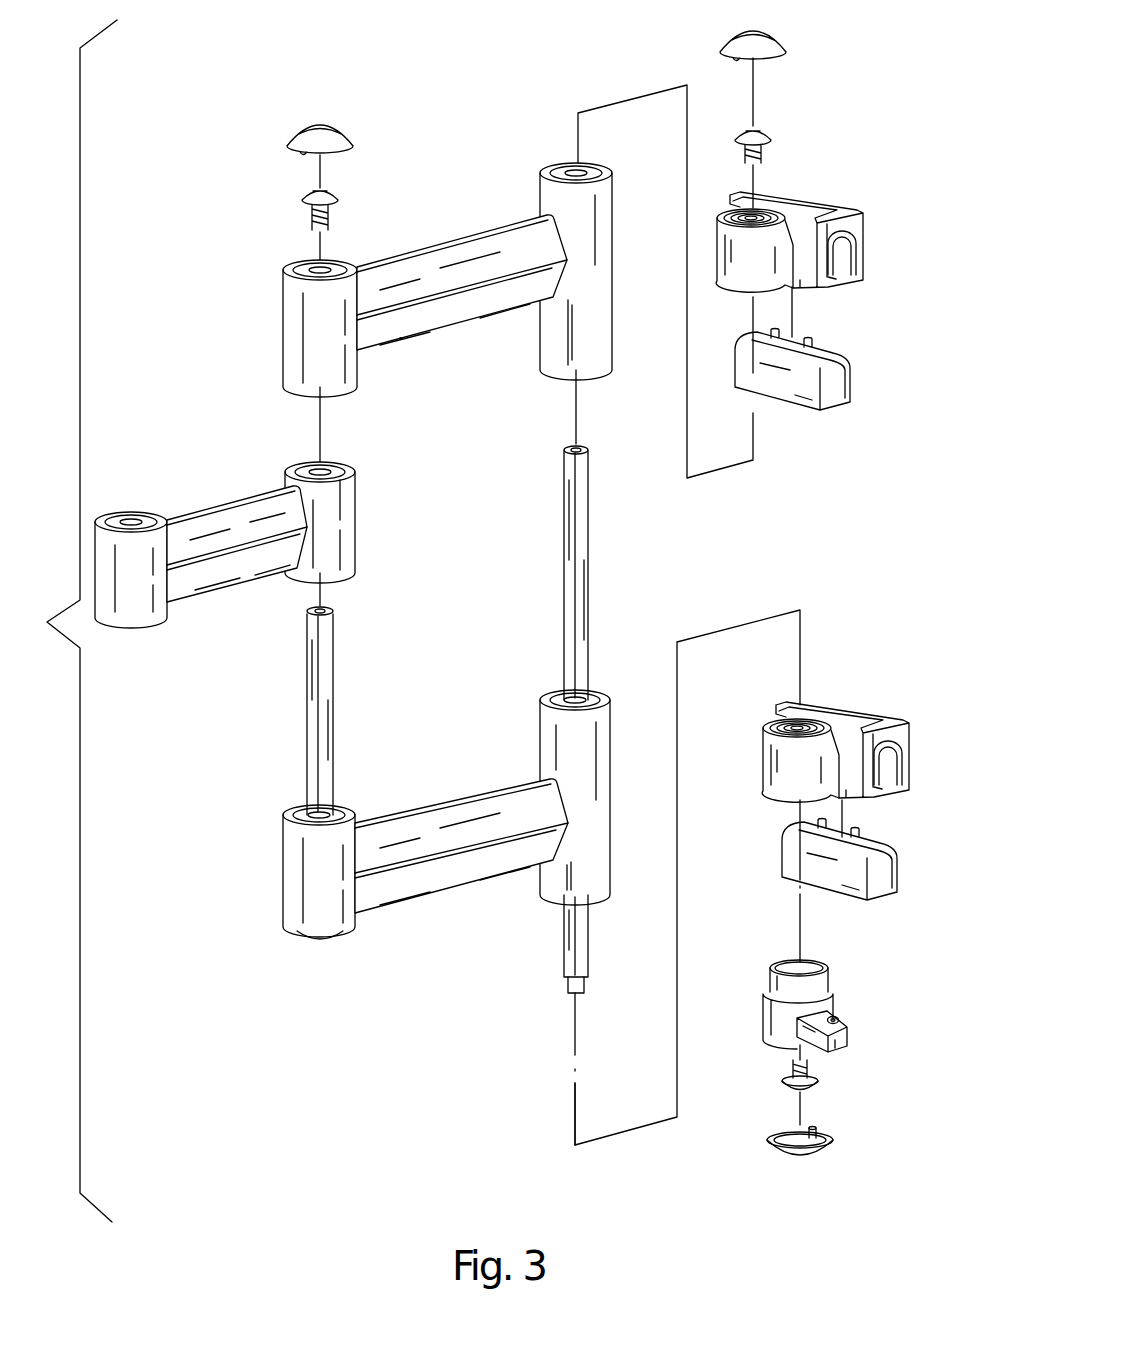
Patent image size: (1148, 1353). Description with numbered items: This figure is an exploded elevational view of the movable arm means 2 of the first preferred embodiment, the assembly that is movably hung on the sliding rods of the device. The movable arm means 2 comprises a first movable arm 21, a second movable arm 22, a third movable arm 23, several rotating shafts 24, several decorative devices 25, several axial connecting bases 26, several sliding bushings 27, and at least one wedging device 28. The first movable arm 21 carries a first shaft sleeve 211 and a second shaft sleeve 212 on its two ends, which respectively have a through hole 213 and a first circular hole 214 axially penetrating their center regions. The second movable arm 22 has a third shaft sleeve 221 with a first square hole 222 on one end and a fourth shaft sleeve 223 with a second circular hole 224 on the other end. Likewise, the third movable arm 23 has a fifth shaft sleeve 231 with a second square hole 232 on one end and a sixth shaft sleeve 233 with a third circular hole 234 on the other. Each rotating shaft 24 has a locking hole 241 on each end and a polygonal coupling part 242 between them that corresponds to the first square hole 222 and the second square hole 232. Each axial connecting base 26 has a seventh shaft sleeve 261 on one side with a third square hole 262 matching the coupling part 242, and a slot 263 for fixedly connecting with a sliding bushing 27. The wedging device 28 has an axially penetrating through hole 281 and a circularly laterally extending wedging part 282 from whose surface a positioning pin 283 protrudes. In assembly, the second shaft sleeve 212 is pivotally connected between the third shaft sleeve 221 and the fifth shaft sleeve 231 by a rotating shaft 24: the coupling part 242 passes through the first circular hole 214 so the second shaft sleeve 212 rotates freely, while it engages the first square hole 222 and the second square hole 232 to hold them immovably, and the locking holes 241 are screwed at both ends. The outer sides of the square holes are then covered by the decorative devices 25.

The movable arm means 2 is at (222, 382).
The first movable arm 21 is at (274, 561).
The first shaft sleeve 211 is at (150, 618).
The second shaft sleeve 212 is at (338, 537).
The through hole 213 is at (131, 520).
The first circular hole 214 is at (340, 470).
The second movable arm 22 is at (408, 257).
The third shaft sleeve 221 is at (305, 312).
The first square hole 222 is at (308, 268).
The fourth shaft sleeve 223 is at (560, 330).
The second circular hole 224 is at (556, 172).
The third movable arm 23 is at (406, 803).
The fifth shaft sleeve 231 is at (312, 877).
The second square hole 232 is at (300, 812).
The sixth shaft sleeve 233 is at (563, 890).
The third circular hole 234 is at (548, 700).
The rotating shaft 24 is at (436, 720).
The locking hole 241 is at (326, 612).
The polygonal coupling part 242 is at (310, 710).
The decorative device 25 is at (300, 135).
The axial connecting base 26 is at (780, 481).
The seventh shaft sleeve 261 is at (725, 255).
The third square hole 262 is at (754, 218).
The slot 263 is at (845, 258).
The sliding bushing 27 is at (848, 405).
The wedging device 28 is at (813, 1014).
The through hole 281 is at (826, 970).
The wedging part 282 is at (845, 1045).
The positioning pin 283 is at (836, 1021).